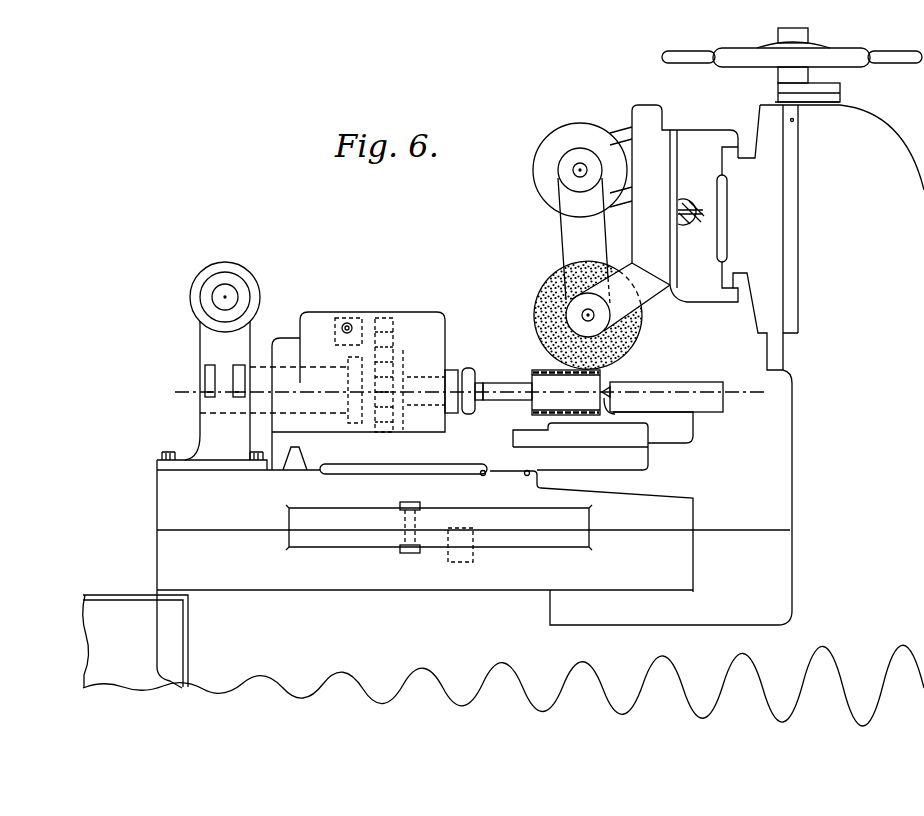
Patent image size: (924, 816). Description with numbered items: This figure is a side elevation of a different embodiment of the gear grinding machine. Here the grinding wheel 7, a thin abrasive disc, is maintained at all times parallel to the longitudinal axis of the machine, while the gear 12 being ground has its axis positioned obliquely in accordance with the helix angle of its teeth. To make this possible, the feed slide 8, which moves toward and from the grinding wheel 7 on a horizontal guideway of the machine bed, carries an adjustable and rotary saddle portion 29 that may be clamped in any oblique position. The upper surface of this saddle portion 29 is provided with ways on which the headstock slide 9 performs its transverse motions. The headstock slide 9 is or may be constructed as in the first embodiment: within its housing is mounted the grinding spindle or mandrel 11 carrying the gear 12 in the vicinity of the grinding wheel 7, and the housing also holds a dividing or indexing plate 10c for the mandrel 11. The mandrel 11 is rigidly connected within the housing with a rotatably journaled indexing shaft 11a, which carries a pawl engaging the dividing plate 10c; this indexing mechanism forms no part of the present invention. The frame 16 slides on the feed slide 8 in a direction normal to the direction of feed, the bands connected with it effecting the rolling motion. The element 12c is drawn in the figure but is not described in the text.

The grinding wheel 7 is at (558, 282).
The feed slide 8 is at (168, 557).
The headstock slide 9 is at (485, 440).
The dividing plate 10c is at (393, 366).
The mandrel 11 is at (500, 397).
The indexing shaft 11a is at (331, 412).
The gear 12 is at (542, 382).
The adjusting screw 12c is at (358, 326).
The frame 16 is at (203, 353).
The saddle portion 29 is at (168, 498).